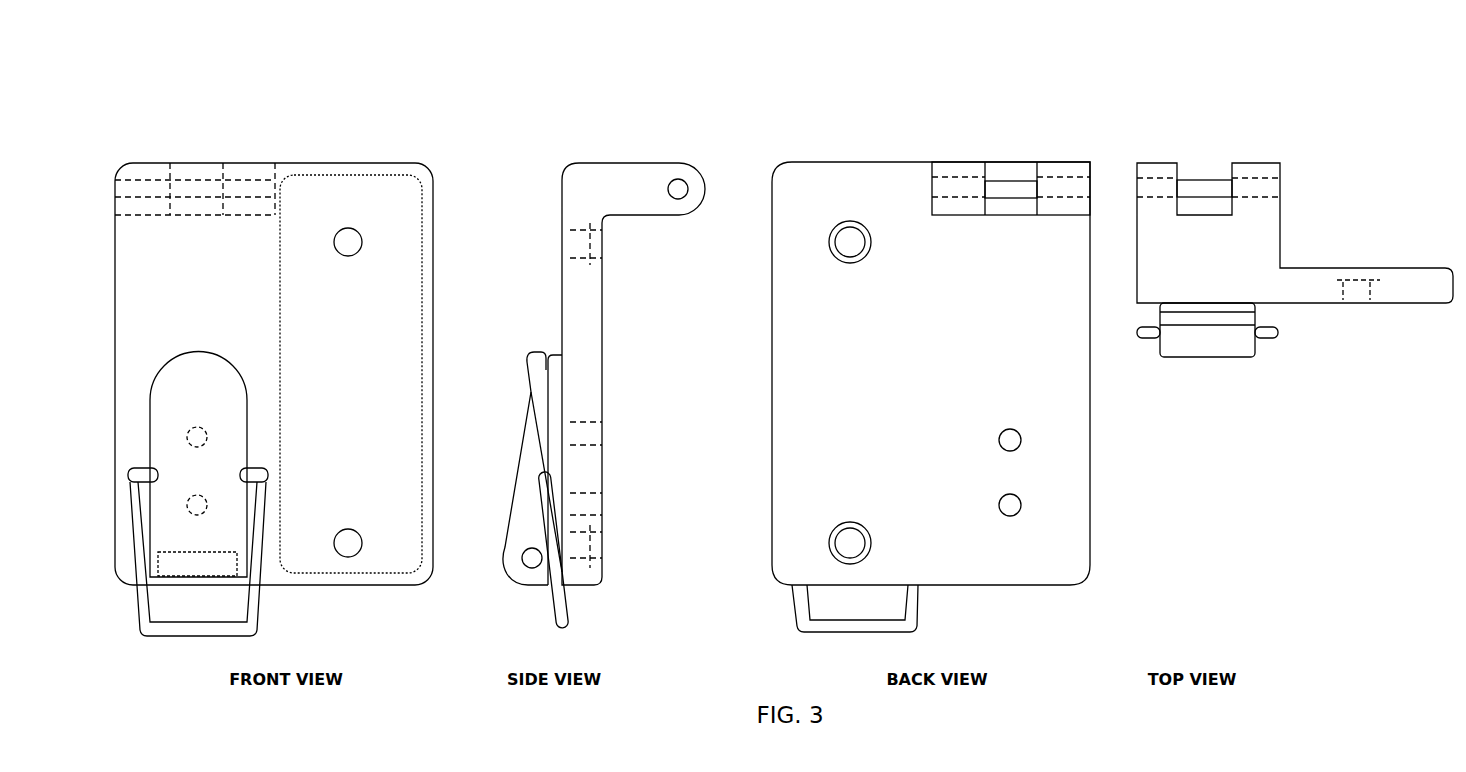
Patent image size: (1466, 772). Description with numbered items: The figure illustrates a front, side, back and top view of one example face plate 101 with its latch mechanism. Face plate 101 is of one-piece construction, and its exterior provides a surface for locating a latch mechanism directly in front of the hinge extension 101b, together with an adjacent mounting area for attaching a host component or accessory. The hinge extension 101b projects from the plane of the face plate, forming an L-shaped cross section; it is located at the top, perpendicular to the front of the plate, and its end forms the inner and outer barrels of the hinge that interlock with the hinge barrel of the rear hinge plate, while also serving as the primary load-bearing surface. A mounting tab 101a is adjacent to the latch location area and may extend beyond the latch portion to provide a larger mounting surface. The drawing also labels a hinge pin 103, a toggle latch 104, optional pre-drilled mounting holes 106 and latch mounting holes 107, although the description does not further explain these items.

The face plate 101 is at (784, 373).
The mounting tab 101a is at (1448, 315).
The hinge extension 101b is at (1207, 258).
The Hinge Pin 103 is at (1202, 178).
The Toggle Latch 104 is at (703, 469).
The Pre-Drilled Mounting Holes (Optional) 106 is at (604, 246).
The Latch Mounting Holes 107 is at (609, 487).